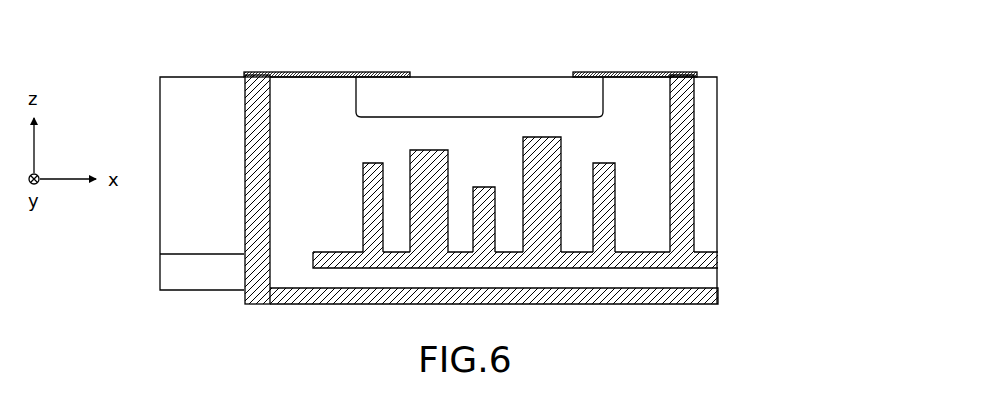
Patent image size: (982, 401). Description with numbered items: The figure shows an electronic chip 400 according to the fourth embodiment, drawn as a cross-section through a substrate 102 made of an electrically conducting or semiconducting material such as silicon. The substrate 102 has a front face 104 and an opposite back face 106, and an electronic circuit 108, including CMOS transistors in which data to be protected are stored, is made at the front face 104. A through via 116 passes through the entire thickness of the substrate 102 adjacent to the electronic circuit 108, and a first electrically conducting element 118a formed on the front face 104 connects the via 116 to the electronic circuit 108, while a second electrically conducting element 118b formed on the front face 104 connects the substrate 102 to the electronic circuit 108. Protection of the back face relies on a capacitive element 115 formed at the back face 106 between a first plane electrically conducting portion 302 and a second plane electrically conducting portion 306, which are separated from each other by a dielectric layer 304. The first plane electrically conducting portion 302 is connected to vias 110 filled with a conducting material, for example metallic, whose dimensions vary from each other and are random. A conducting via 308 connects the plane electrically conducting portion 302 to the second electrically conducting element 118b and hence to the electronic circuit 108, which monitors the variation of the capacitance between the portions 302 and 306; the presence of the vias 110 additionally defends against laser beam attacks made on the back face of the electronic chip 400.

The front face 104 is at (178, 68).
The dielectric layer 304 is at (172, 272).
The back face 106 is at (224, 262).
The substrate 102 is at (708, 228).
The through via 116 is at (246, 87).
The second plane electrically conducting portion 306 is at (544, 302).
The conducting via 308 is at (690, 136).
The first plane electrically conducting portion 302 is at (718, 258).
The vias 110 is at (614, 196).
The electronic circuit 108 is at (510, 85).
The first electrically conducting element 118a is at (338, 72).
The second electrically conducting element 118b is at (627, 72).
The electronic chip 400 is at (723, 50).
The capacitive element 115 is at (733, 292).